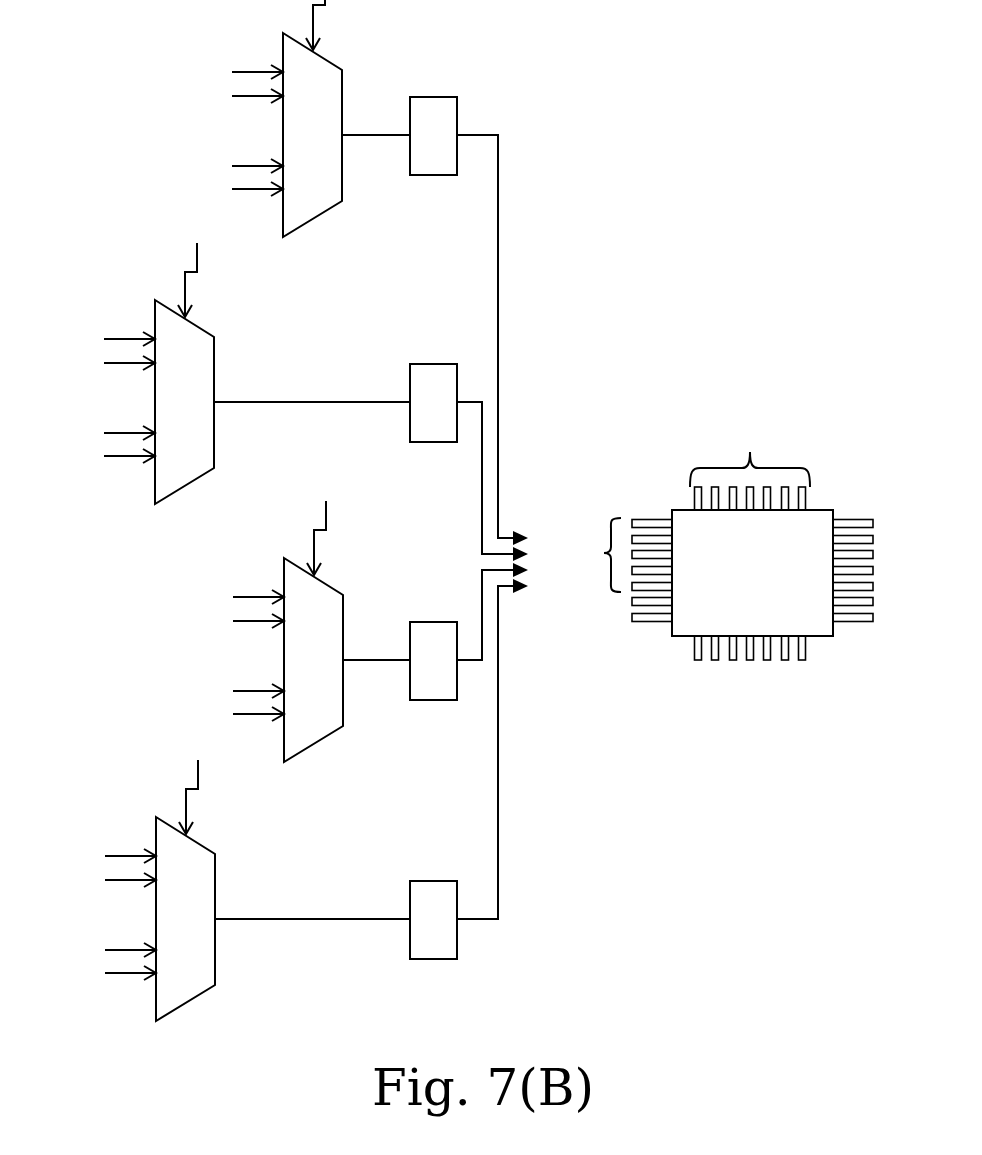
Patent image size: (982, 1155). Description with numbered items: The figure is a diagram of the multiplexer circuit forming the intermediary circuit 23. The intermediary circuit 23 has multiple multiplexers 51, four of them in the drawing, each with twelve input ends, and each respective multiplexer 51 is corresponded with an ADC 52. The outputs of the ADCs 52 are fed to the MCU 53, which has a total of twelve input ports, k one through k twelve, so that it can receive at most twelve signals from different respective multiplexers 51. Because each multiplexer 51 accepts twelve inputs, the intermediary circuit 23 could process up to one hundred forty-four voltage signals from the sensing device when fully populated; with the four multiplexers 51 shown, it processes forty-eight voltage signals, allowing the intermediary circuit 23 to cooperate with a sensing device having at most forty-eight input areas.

The multiplexer 51 is at (217, 510).
The ADC 52 is at (371, 528).
The MCU 53 is at (717, 539).
The intermediary circuit 23 is at (789, 971).